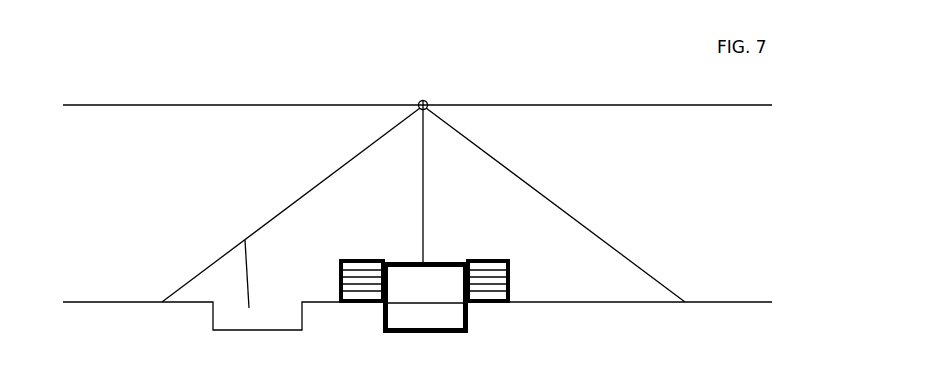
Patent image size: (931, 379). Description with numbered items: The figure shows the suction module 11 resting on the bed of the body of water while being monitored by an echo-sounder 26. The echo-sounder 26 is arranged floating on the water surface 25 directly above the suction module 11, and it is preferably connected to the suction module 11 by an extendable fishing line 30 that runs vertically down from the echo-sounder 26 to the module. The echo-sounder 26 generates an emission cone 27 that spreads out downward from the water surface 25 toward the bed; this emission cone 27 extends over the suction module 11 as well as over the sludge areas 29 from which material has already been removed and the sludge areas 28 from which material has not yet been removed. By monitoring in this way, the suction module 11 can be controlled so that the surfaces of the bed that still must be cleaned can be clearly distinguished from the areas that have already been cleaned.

The suction module 11 is at (397, 293).
The water surface 25 is at (632, 105).
The echo-sounder 26 is at (419, 107).
The emission cone 27 is at (523, 180).
The sludge areas from which material has not yet been removed 28 is at (535, 302).
The sludge areas from which material has already been removed 29 is at (244, 241).
The extendable fishing line 30 is at (423, 215).